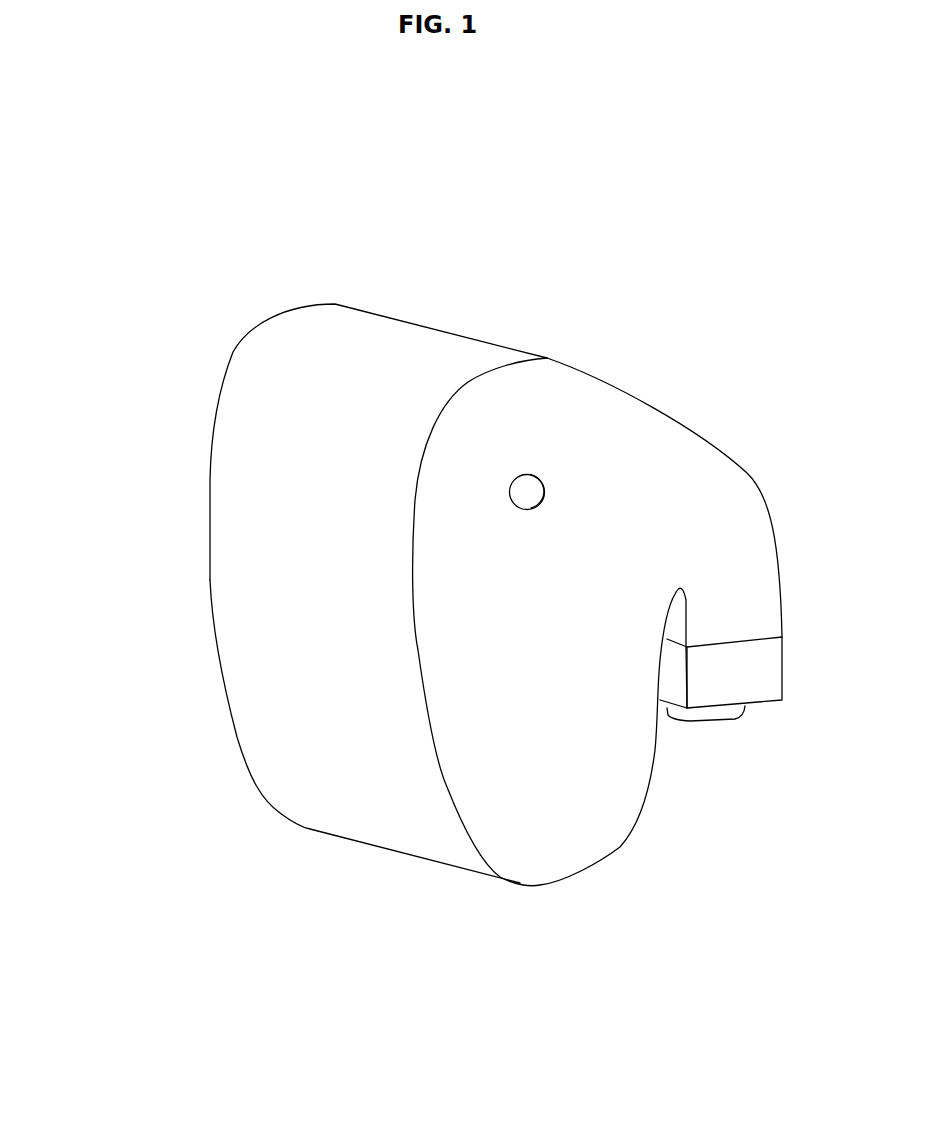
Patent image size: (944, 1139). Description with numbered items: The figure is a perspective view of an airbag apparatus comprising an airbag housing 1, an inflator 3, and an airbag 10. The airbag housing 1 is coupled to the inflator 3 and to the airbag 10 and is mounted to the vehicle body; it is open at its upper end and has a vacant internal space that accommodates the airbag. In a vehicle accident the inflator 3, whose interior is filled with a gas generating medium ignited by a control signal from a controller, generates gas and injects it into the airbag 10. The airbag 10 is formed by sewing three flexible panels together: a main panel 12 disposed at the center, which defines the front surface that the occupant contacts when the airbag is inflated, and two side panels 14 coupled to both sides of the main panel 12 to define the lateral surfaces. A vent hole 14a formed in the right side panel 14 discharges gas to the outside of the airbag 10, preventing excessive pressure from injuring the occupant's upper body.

The airbag 10 is at (233, 292).
The main panel 12 is at (392, 360).
The side panel 14 is at (622, 425).
The vent hole 14a is at (537, 493).
The airbag housing 1 is at (758, 678).
The inflator 3 is at (713, 715).